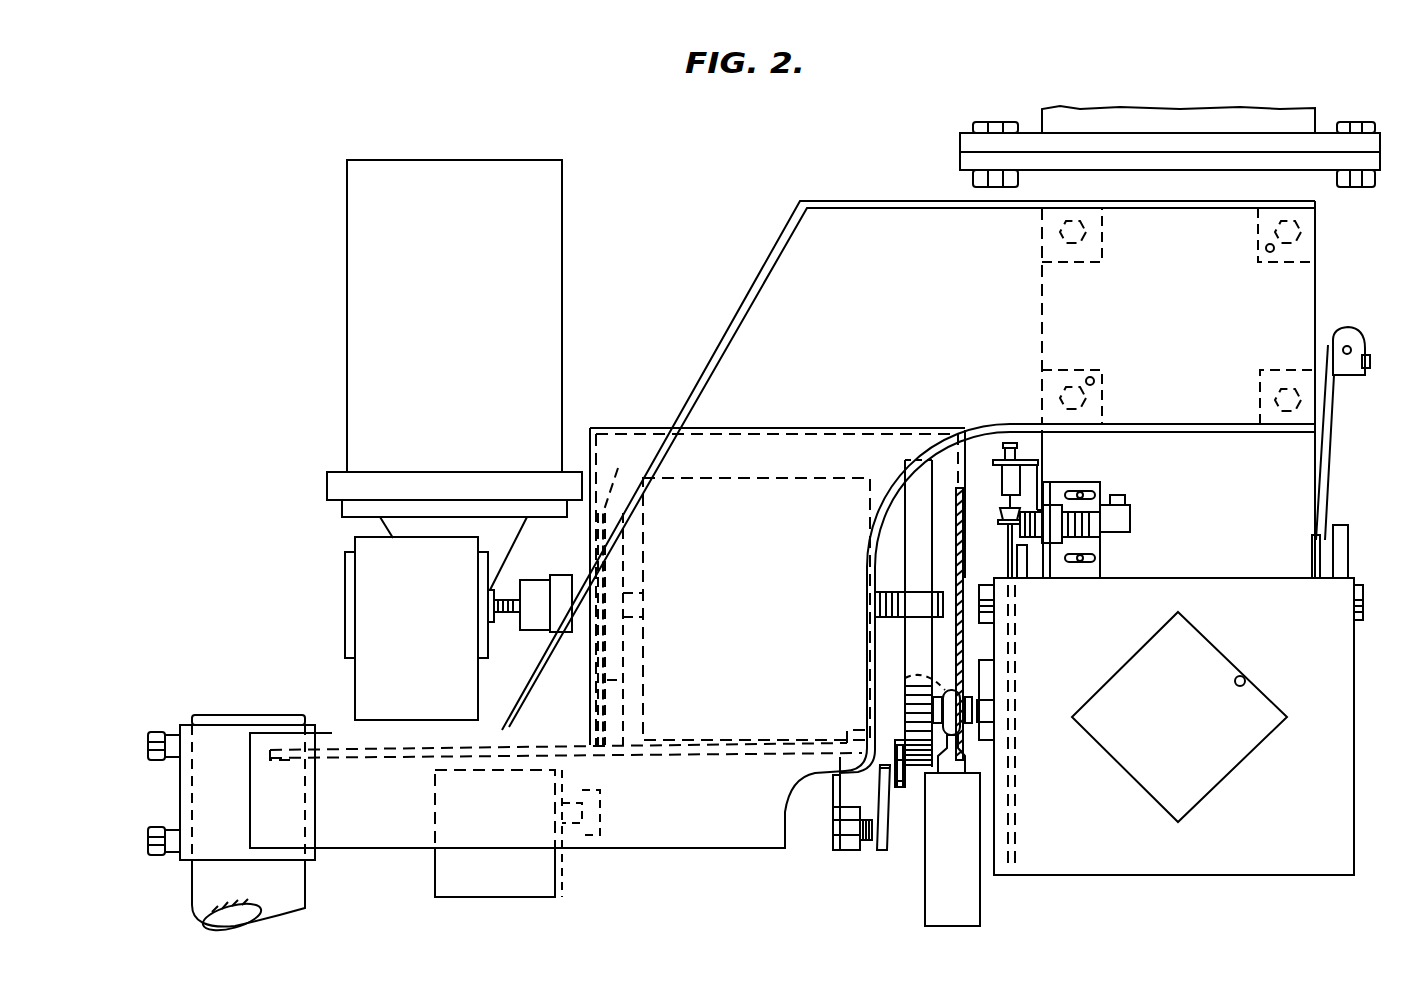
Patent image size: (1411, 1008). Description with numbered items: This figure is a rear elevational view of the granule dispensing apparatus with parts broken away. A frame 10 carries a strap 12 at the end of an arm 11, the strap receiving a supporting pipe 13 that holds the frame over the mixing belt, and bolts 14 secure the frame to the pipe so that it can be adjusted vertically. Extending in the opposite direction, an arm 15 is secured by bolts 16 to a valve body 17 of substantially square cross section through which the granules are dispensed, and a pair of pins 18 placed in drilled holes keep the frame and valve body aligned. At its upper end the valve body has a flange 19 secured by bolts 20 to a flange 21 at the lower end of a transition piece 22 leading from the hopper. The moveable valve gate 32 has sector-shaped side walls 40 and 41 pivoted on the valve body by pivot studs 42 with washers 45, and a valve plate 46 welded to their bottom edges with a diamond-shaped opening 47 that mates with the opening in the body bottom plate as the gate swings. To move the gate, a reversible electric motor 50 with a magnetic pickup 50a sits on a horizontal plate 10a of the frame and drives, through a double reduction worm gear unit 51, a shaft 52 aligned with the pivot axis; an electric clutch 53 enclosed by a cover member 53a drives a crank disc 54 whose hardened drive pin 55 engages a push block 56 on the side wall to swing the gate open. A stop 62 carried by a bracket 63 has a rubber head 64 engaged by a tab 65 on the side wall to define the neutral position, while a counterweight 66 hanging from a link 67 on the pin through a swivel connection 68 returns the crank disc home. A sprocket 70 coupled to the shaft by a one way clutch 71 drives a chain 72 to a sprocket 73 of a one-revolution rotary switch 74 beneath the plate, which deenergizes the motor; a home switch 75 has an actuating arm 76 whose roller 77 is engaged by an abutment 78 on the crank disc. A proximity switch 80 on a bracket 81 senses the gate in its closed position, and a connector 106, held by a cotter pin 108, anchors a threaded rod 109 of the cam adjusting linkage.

The frame 10 is at (742, 292).
The horizontal plate 10a is at (695, 745).
The arm 11 is at (412, 830).
The strap 12 is at (225, 730).
The supporting pipe 13 is at (292, 904).
The bolts 14 is at (148, 838).
The arm 15 is at (1167, 327).
The bolts 16 is at (1060, 232).
The valve body 17 is at (1209, 514).
The pins 18 is at (1266, 250).
The flange 19 is at (965, 166).
The bolts 20 is at (990, 122).
The flange 21 is at (960, 148).
The transition piece 22 is at (1172, 118).
The valve gate 32 is at (1362, 693).
The side wall 40 is at (1340, 530).
The side wall 41 is at (1005, 538).
The pivot studs 42 is at (985, 626).
The washers 45 is at (1022, 565).
The valve plate 46 is at (1262, 807).
The diamond-shaped opening 47 is at (1245, 680).
The reversible electric motor 50 is at (437, 306).
The magnetic pickup 50a is at (335, 487).
The double reduction worm gear unit 51 is at (405, 629).
The shaft 52 is at (503, 614).
The electric clutch 53 is at (760, 490).
The cover member 53a is at (636, 428).
The crank disc 54 is at (915, 548).
The drive pin 55 is at (985, 708).
The push block 56 is at (988, 678).
The stop 62 is at (996, 474).
The bracket 63 is at (1042, 475).
The head 64 is at (890, 520).
The tab 65 is at (997, 522).
The counterweight 66 is at (963, 905).
The link 67 is at (955, 765).
The swivel connection 68 is at (905, 680).
The sprocket 70 is at (615, 591).
The one way clutch 71 is at (563, 585).
The chain 72 is at (612, 728).
The sprocket 73 is at (590, 855).
The one-revolution rotary switch 74 is at (482, 882).
The home switch 75 is at (845, 855).
The actuating arm 76 is at (884, 852).
The roller 77 is at (900, 790).
The abutment 78 is at (897, 745).
The proximity switch 80 is at (1120, 520).
The bracket 81 is at (1105, 490).
The connector 106 is at (1352, 340).
The cotter pin 108 is at (1368, 365).
The threaded rod 109 is at (1343, 350).